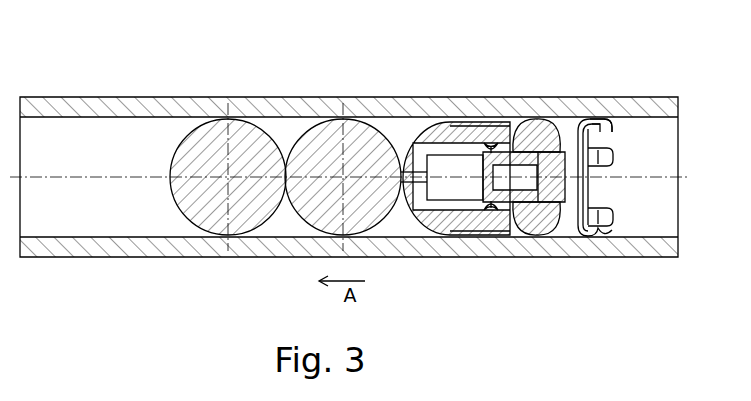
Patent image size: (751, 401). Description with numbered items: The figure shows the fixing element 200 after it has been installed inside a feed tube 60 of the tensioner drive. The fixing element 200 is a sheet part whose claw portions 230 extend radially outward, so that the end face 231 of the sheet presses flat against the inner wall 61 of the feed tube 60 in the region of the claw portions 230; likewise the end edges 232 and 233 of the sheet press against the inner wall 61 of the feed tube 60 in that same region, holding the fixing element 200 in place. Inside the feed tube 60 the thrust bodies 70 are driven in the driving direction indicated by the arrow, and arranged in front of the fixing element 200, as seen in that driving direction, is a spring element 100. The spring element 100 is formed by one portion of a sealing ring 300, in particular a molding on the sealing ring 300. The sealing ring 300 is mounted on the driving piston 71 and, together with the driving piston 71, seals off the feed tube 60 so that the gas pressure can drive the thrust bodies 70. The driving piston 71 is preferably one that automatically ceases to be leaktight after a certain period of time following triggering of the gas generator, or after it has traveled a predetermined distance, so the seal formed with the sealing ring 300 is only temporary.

The feed tube 60 is at (147, 242).
The inner wall 61 is at (76, 237).
The thrust bodies 70 is at (217, 222).
The driving piston 71 is at (460, 232).
The spring element 100 is at (567, 228).
The fixing element 200 is at (635, 177).
The claw portions 230 is at (612, 130).
The end face 231 is at (598, 118).
The end edge 232 is at (596, 123).
The end edge 233 is at (610, 119).
The sealing ring 300 is at (540, 232).